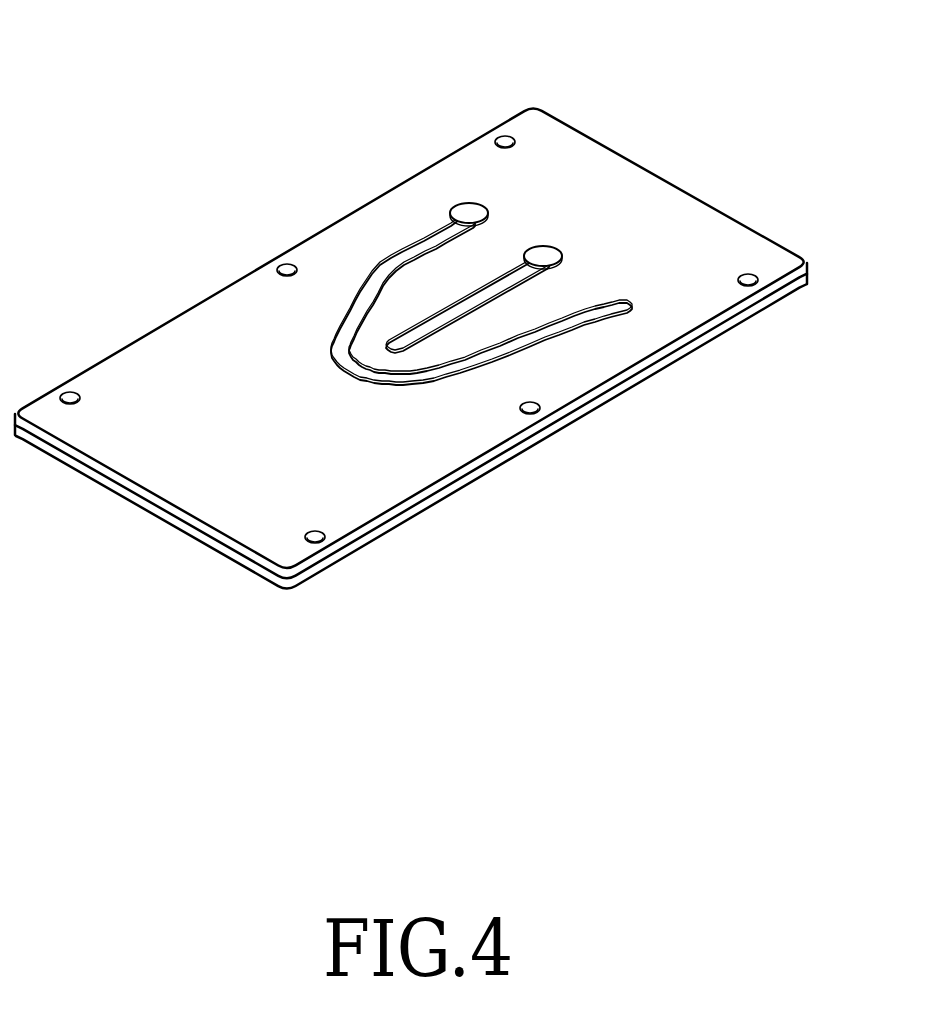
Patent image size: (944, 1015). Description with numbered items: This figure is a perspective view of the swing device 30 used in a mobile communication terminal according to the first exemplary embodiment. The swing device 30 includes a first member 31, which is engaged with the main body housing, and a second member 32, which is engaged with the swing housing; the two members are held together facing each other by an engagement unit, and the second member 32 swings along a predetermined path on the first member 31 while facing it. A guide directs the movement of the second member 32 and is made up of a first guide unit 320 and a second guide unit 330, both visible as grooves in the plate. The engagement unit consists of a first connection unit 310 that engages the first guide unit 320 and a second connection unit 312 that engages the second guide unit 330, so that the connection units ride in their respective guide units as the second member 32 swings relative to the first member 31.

The swing device 30 is at (158, 33).
The first member 31 is at (443, 526).
The second member 32 is at (130, 281).
The first connection unit 310 is at (543, 254).
The second connection unit 312 is at (472, 211).
The first guide unit 320 is at (450, 302).
The second guide unit 330 is at (513, 347).